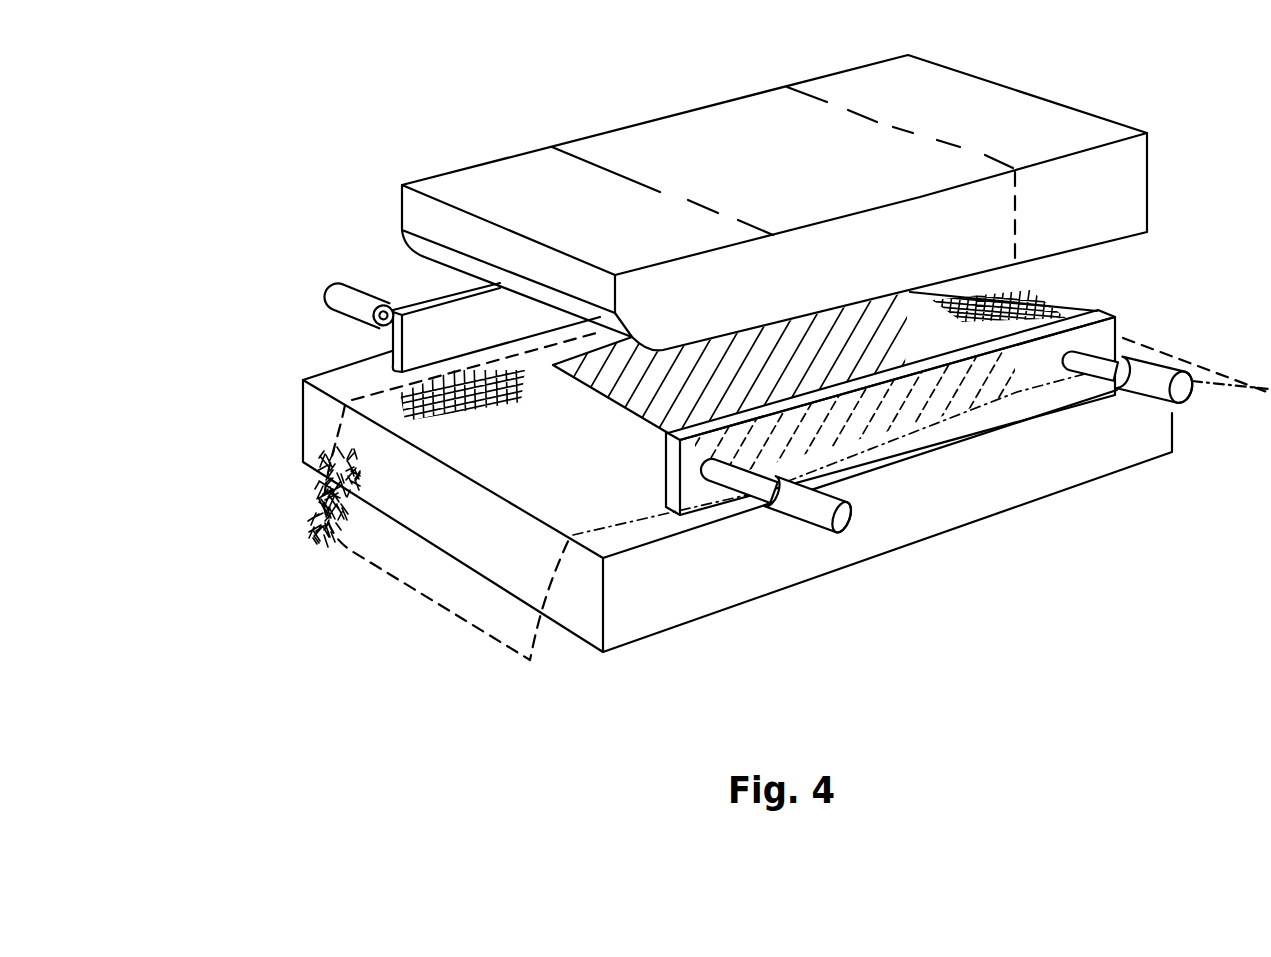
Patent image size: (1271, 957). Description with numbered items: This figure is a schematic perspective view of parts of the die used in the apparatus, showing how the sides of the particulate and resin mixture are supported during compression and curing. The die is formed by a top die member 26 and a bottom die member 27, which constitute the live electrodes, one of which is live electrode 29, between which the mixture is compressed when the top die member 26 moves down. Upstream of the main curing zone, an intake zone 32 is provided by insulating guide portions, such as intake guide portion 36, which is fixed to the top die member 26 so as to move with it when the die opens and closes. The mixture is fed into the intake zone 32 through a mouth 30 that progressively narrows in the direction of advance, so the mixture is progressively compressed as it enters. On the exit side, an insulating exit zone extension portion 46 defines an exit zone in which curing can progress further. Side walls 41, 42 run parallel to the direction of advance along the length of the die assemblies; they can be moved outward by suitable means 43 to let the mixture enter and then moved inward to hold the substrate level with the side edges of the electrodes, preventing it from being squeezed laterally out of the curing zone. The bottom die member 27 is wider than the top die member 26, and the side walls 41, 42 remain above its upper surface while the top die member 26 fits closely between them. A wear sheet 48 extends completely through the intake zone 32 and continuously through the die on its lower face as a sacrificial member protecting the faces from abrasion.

The top die member 26 is at (788, 155).
The bottom die member 27 is at (940, 495).
The live electrode 29 is at (718, 380).
The mouth 30 is at (636, 337).
The intake zone 32 is at (575, 434).
The intake guide portion 36 is at (537, 205).
The side wall 41 is at (1027, 380).
The side wall 42 is at (433, 344).
The means for moving side walls 43 is at (360, 297).
The exit zone extension portion 46 is at (1092, 210).
The wear sheet 48 is at (300, 486).